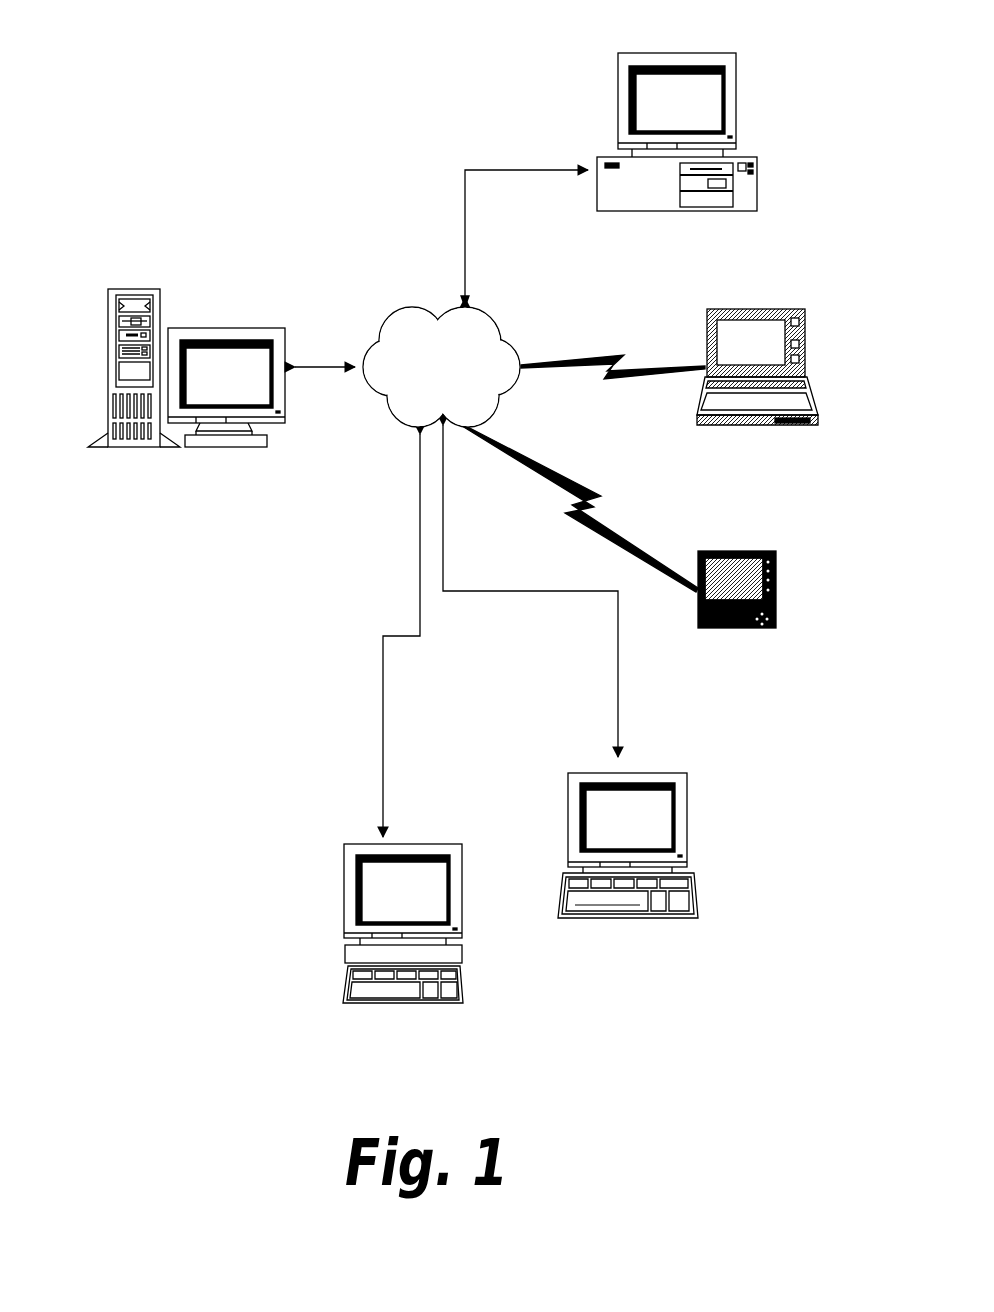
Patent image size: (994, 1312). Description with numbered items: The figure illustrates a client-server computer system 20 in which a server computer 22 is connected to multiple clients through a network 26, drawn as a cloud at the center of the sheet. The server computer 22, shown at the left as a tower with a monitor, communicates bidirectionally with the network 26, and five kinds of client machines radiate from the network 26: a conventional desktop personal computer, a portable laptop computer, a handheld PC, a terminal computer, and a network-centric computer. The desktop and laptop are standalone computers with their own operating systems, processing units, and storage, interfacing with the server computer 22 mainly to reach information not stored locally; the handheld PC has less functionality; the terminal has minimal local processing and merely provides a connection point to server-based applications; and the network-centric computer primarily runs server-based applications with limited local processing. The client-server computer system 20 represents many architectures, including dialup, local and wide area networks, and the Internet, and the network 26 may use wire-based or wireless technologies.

The client-server computer system 20 is at (282, 104).
The server computer 22 is at (128, 289).
The network 26 is at (418, 308).